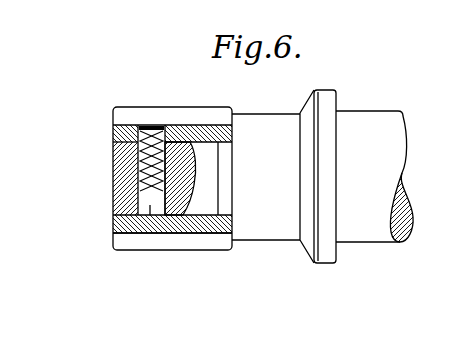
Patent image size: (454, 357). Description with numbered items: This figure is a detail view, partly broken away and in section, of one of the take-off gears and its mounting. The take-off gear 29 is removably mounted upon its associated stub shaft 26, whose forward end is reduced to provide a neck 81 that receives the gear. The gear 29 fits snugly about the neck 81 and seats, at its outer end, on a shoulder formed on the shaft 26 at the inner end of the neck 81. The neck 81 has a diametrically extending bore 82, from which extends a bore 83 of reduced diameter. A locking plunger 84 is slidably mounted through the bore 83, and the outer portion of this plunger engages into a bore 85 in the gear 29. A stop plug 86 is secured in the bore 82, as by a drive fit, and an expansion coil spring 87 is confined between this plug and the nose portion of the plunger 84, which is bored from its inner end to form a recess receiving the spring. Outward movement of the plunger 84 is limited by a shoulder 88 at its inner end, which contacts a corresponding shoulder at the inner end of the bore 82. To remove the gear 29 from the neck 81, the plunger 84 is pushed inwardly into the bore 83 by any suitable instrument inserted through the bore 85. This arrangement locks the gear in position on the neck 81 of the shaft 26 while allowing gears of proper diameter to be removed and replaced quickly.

The stub shaft 26 is at (375, 122).
The take-off gear 29 is at (187, 244).
The neck 81 is at (113, 187).
The bore 82 is at (113, 197).
The bore of reduced diameter 83 is at (113, 143).
The locking plunger 84 is at (167, 125).
The bore 85 is at (143, 127).
The stop plug 86 is at (138, 232).
The expansion coil spring 87 is at (165, 180).
The shoulder 88 is at (138, 177).